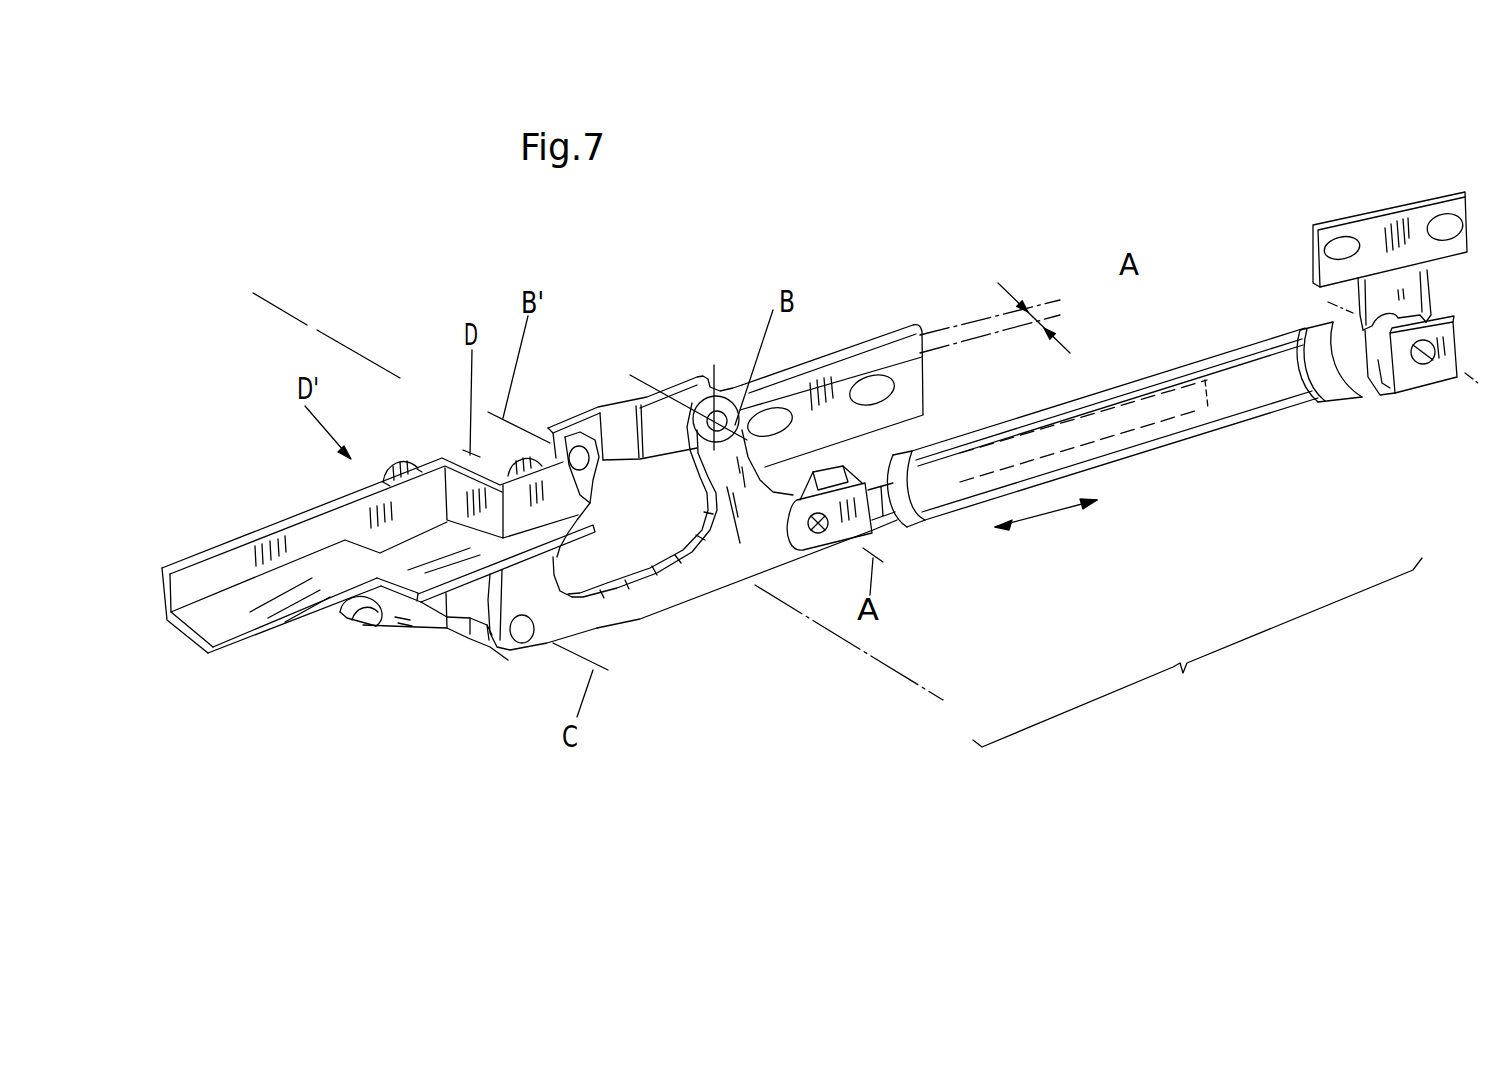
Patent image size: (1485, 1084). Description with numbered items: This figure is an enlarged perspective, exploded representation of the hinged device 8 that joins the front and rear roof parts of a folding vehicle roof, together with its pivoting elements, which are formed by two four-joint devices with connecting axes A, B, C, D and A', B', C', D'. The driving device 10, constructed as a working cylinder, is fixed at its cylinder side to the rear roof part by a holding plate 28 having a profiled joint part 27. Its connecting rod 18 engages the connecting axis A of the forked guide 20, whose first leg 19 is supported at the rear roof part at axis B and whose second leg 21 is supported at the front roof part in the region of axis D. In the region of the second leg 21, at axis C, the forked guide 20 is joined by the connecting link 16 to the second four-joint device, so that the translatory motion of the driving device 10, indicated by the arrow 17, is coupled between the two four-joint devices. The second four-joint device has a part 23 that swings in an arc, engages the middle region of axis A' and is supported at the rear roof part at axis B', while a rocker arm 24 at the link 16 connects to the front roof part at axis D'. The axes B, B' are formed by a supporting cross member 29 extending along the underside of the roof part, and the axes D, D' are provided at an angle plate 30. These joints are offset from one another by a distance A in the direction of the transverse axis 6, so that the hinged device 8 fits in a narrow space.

The transverse axis 6 is at (915, 685).
The hinged device 8 is at (1183, 673).
The driving device 10 is at (1257, 430).
The connecting link 16 is at (470, 620).
The arrow 17 is at (1057, 512).
The connecting rod 18 is at (890, 503).
The first leg 19 is at (700, 392).
The forked guide 20 is at (712, 582).
The second leg 21 is at (505, 605).
The part which swings in an arc 23 is at (452, 598).
The rocker arm 24 is at (382, 470).
The profiled joint part 27 is at (1413, 380).
The holding plate 28 is at (1382, 205).
The supporting cross member 29 is at (887, 330).
The angle plate 30 is at (250, 527).